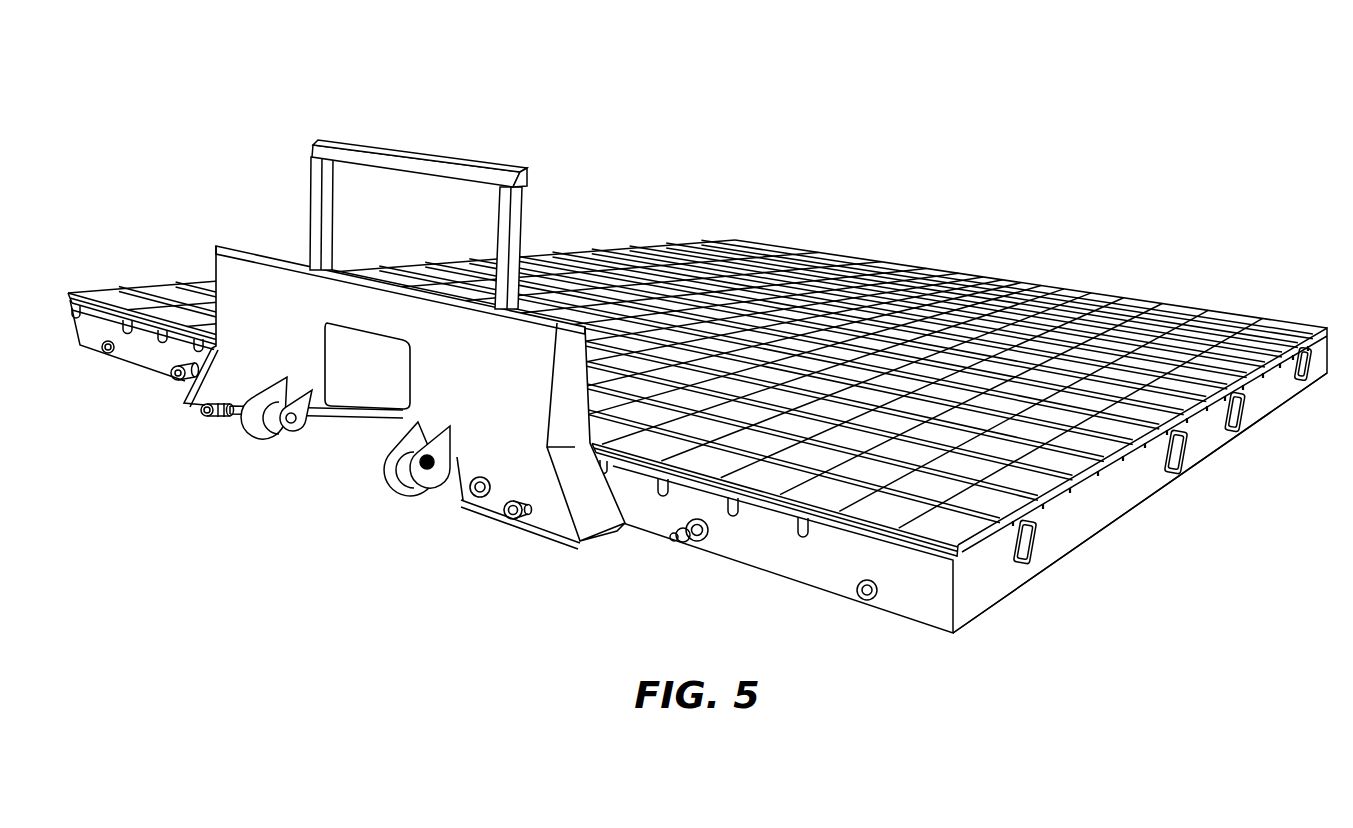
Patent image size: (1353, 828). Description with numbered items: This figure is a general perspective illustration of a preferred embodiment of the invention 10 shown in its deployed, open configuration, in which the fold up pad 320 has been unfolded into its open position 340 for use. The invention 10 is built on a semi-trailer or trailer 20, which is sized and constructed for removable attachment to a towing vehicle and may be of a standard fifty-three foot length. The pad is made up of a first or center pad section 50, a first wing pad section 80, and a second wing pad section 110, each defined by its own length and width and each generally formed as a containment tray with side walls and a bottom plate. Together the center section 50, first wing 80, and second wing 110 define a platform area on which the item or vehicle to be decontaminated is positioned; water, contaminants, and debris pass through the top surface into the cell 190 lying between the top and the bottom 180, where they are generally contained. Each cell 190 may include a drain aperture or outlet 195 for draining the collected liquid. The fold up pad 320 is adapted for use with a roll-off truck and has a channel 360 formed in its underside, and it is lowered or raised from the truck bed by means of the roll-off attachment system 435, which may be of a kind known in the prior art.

The invention 10 is at (697, 343).
The trailer 20 is at (548, 508).
The center pad section 50 is at (690, 371).
The first wing pad section 80 is at (1140, 480).
The second wing pad section 110 is at (655, 246).
The bottom 180 is at (1132, 503).
The cell 190 is at (960, 516).
The outlet 195 is at (172, 378).
The fold up pad 320 is at (1188, 306).
The open position 340 is at (1272, 322).
The channel 360 is at (453, 490).
The roll-off attachment system 435 is at (342, 412).